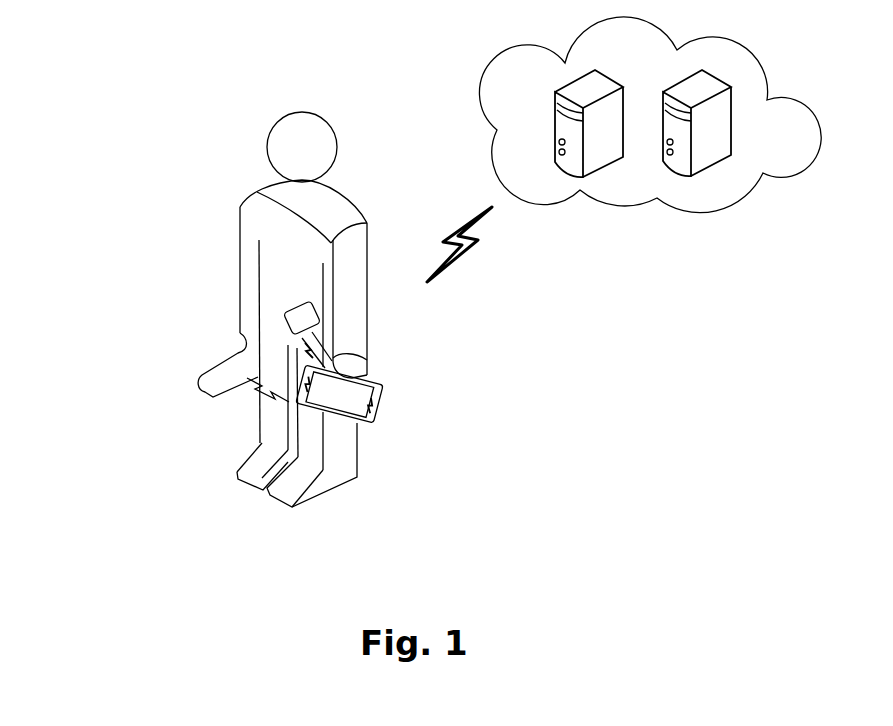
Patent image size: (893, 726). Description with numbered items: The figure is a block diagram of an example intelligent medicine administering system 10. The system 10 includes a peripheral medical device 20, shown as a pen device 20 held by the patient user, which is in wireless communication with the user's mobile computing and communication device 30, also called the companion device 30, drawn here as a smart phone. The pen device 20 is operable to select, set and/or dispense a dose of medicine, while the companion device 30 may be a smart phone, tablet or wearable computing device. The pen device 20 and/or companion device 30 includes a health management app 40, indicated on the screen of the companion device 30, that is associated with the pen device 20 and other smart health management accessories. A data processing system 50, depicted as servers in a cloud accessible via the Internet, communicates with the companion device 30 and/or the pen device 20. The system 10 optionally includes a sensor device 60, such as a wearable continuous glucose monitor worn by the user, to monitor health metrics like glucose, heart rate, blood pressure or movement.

The intelligent medicine administering system 10 is at (160, 189).
The peripheral medical device 20 is at (208, 372).
The mobile computing and communication device 30 is at (383, 403).
The health management app 40 is at (351, 404).
The data processing system 50 is at (680, 207).
The sensor device 60 is at (283, 313).